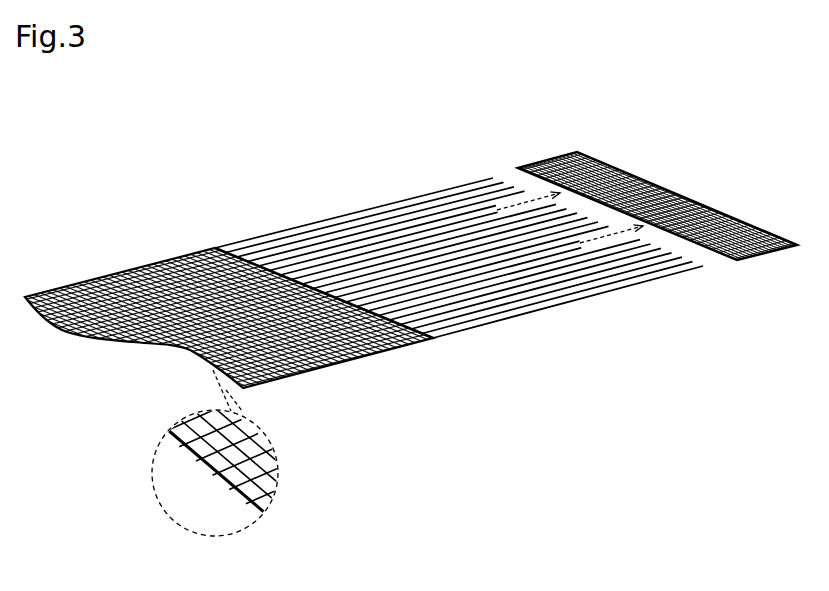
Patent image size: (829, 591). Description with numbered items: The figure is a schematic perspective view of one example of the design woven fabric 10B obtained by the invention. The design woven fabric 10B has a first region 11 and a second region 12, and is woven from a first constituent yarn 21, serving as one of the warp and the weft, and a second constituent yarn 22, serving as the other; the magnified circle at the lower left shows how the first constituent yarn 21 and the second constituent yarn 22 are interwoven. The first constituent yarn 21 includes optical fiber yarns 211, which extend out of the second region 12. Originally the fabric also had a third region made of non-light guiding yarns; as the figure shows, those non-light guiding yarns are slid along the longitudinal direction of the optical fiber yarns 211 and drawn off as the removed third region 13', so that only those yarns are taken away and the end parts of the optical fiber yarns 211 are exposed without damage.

The design woven fabric 10B is at (148, 185).
The first region 11 is at (222, 301).
The second region 12 is at (454, 249).
The removed third region 13' is at (651, 184).
The optical fiber yarn 211 is at (443, 189).
The first constituent yarn 21 is at (243, 460).
The second constituent yarn 22 is at (247, 457).